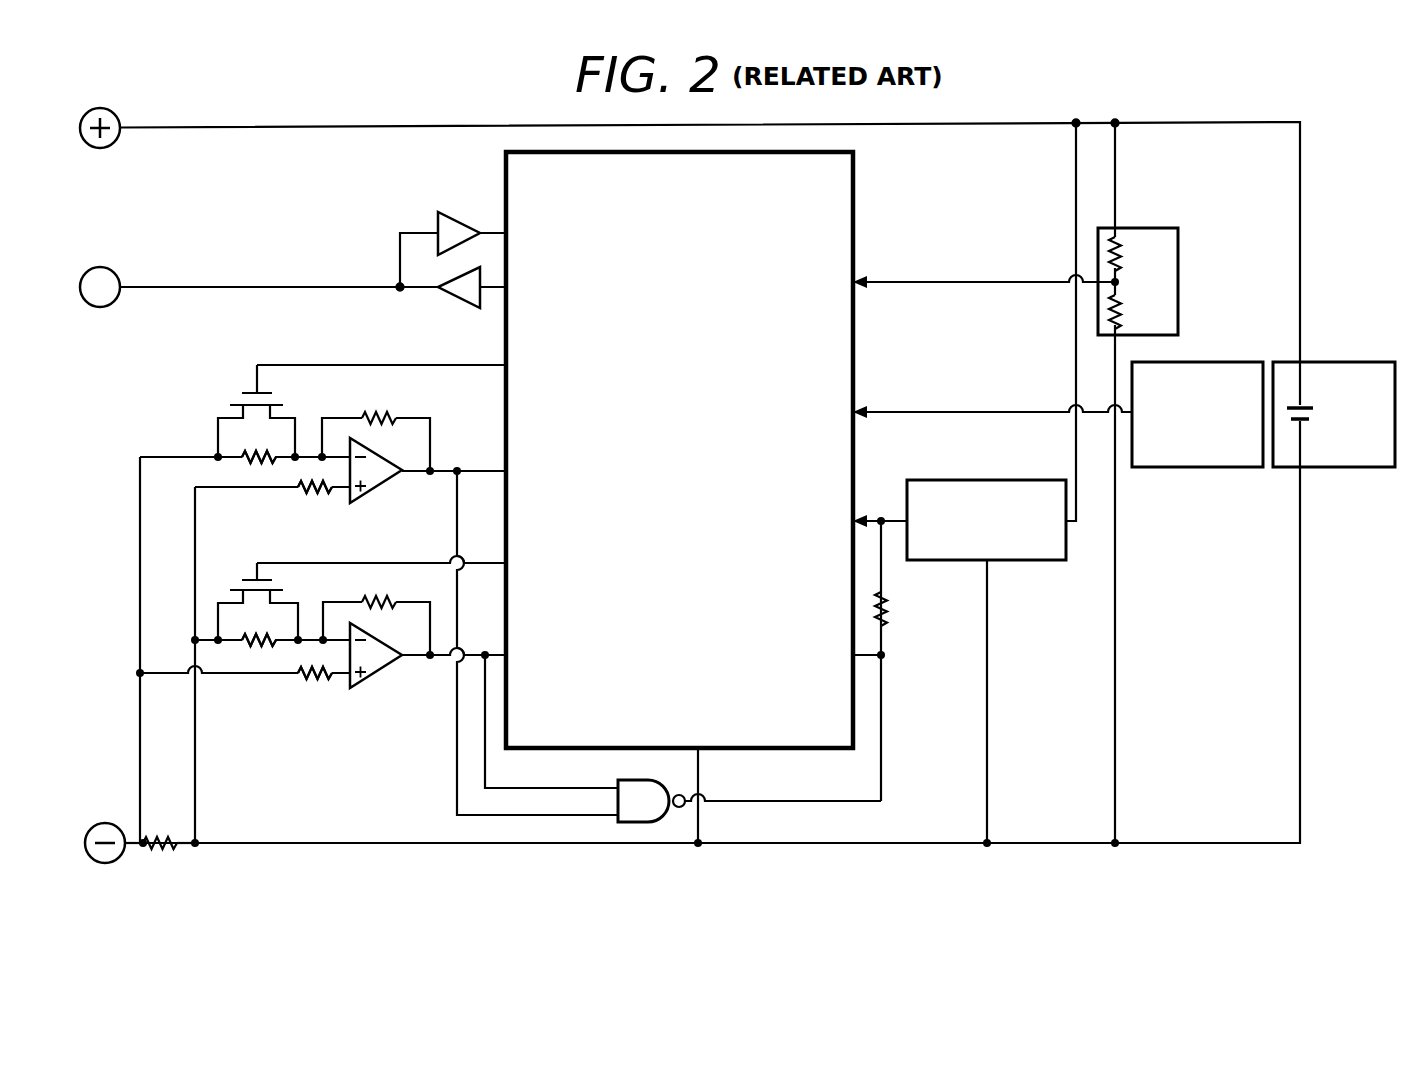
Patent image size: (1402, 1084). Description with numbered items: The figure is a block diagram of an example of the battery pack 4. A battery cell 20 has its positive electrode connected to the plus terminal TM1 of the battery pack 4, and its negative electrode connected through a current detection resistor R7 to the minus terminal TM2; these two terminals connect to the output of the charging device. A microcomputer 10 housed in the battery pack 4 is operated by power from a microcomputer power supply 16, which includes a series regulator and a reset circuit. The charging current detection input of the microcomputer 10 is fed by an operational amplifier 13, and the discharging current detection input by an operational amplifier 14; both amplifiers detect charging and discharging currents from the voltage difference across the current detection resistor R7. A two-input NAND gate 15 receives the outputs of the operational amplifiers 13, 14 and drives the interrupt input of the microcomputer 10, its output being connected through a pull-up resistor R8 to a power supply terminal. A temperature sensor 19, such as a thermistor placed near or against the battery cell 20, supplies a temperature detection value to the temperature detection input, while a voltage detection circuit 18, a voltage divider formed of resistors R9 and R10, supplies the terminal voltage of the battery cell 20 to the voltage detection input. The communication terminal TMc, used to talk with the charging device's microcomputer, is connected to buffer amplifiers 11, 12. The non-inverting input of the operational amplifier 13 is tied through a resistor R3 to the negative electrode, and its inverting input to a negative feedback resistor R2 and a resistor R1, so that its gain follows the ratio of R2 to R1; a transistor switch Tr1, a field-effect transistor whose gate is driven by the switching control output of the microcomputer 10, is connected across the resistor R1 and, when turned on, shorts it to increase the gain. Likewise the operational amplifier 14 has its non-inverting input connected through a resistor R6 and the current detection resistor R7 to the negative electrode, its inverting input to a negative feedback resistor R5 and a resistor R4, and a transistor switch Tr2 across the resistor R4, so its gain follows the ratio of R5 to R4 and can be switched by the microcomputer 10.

The battery pack 4 is at (250, 210).
The microcomputer 10 is at (855, 207).
The buffer amplifier 11 is at (454, 212).
The buffer amplifier 12 is at (460, 312).
The operational amplifier 13 is at (373, 494).
The operational amplifier 14 is at (373, 679).
The 2-input NAND gate 15 is at (618, 783).
The microcomputer power supply 16 is at (958, 480).
The voltage detection circuit 18 is at (1149, 259).
The temperature sensor 19 is at (1215, 468).
The battery cell 20 is at (1340, 356).
The plus terminal TM1 is at (100, 149).
The output and input terminal TMc is at (100, 308).
The minus terminal TM2 is at (105, 822).
The transistor switch Tr1 is at (254, 409).
The transistor switch Tr2 is at (255, 593).
The resistor R1 is at (259, 441).
The negative feedback resistor R2 is at (376, 427).
The resistor R3 is at (315, 505).
The resistor R4 is at (259, 625).
The negative feedback resistor R5 is at (376, 610).
The resistor R6 is at (315, 690).
The current detection resistor R7 is at (169, 826).
The pull-up resistor R8 is at (902, 609).
The resistor R9 is at (1134, 254).
The resistor R10 is at (1141, 312).